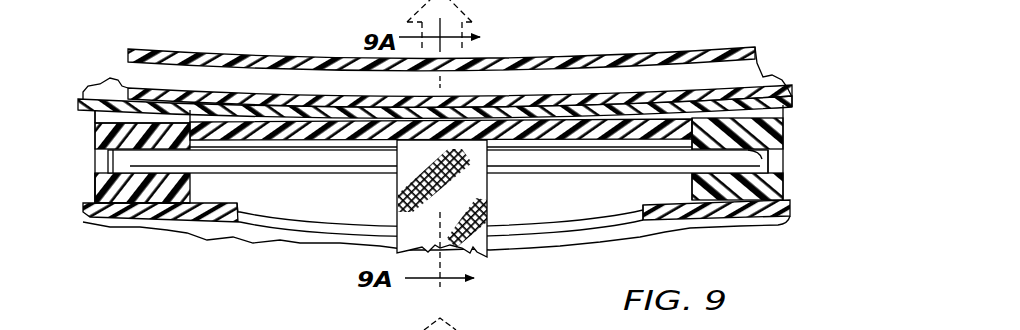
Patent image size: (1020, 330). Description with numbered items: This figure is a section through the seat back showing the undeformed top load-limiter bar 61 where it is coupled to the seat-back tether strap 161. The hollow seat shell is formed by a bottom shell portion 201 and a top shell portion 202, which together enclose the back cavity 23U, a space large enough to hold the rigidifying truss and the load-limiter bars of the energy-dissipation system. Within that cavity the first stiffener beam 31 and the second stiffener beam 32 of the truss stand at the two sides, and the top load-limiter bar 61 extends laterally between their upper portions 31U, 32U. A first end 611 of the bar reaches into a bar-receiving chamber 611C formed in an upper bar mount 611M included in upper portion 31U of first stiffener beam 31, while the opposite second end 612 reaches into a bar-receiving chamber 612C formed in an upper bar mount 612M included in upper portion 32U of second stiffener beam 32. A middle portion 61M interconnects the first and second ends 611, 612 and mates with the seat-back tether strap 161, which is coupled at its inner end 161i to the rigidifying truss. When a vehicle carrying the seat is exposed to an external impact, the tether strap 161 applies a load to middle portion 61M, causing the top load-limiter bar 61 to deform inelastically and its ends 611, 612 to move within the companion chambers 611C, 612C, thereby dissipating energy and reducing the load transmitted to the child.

The top shell portion 202 is at (789, 70).
The upper portion of second stiffener beam 32U is at (792, 117).
The top load-limiter bar 61 is at (607, 183).
The first end of top load-limiter bar 611 is at (136, 148).
The upper bar mount 611M is at (138, 132).
The bar-receiving chamber 611C is at (95, 185).
The first stiffener beam 31 is at (92, 189).
The upper portion of first stiffener beam 31U is at (108, 156).
The second end of top load-limiter bar 612 is at (757, 202).
The upper bar mount 612M is at (758, 188).
The bar-receiving chamber 612C is at (768, 158).
The second stiffener beam 32 is at (790, 182).
The middle portion of top load-limiter bar 61M is at (477, 163).
The bottom shell portion 201 is at (687, 235).
The back cavity 23U is at (262, 194).
The seat-back tether strap 161 is at (433, 214).
The inner end of seat-back tether strap 161i is at (403, 172).